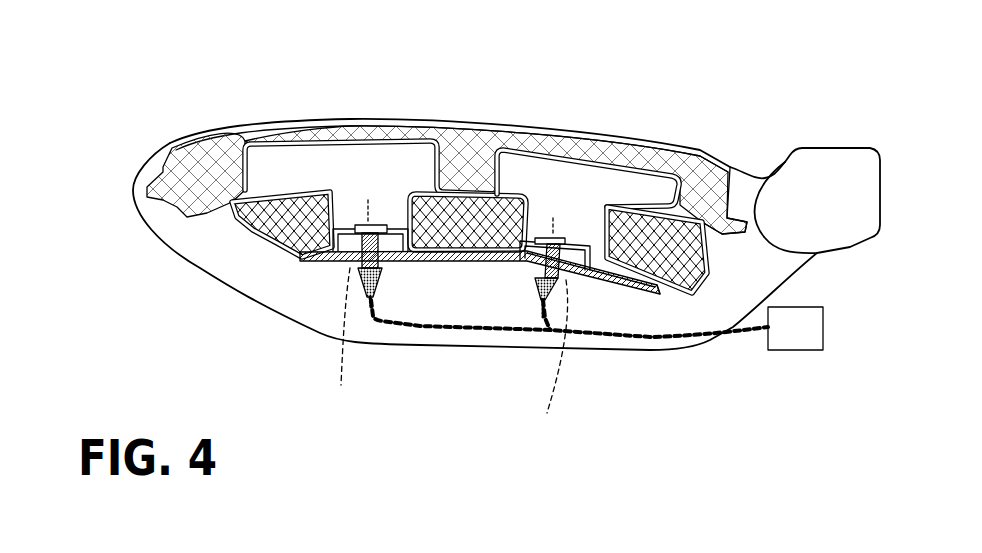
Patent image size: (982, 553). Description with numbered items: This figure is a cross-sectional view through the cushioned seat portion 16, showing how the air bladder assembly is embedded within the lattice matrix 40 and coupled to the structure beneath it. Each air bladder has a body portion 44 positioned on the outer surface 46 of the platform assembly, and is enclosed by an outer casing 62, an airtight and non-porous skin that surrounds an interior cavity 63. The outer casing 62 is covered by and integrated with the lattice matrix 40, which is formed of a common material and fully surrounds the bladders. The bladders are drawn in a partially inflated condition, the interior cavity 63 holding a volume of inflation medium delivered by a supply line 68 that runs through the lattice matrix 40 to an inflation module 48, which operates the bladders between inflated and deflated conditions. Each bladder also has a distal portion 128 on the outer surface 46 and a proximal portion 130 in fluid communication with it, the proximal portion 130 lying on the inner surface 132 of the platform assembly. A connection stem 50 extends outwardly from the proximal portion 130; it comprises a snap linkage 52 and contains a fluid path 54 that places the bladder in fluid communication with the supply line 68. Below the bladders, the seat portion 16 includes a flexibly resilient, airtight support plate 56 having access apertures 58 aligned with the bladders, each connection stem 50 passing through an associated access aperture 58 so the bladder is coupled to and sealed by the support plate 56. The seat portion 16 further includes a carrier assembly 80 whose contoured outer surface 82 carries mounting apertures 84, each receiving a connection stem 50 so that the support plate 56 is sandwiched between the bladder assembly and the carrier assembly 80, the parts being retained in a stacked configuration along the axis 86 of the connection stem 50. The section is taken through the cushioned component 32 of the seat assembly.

The seat portion 16 is at (818, 97).
The battery tray assembly 32 is at (112, 209).
The lattice matrix 40 is at (192, 157).
The body portion 44 is at (660, 185).
The outer surface 46 is at (735, 172).
The inflation module 48 is at (797, 349).
The connection stem 50 is at (368, 224).
The snap linkage 52 is at (353, 252).
The fluid path 54 is at (382, 265).
The support plate 56 is at (533, 258).
The access aperture 58 is at (545, 268).
The outer casing 62 is at (373, 126).
The interior cavity 63 is at (302, 160).
The supply line 68 is at (743, 333).
The carrier assembly 80 is at (607, 277).
The outer surface 82 is at (673, 292).
The mounting aperture 84 is at (352, 263).
The axis 86 is at (438, 356).
The distal portion 128 is at (550, 170).
The proximal portion 130 is at (590, 223).
The inner surface 132 is at (250, 255).